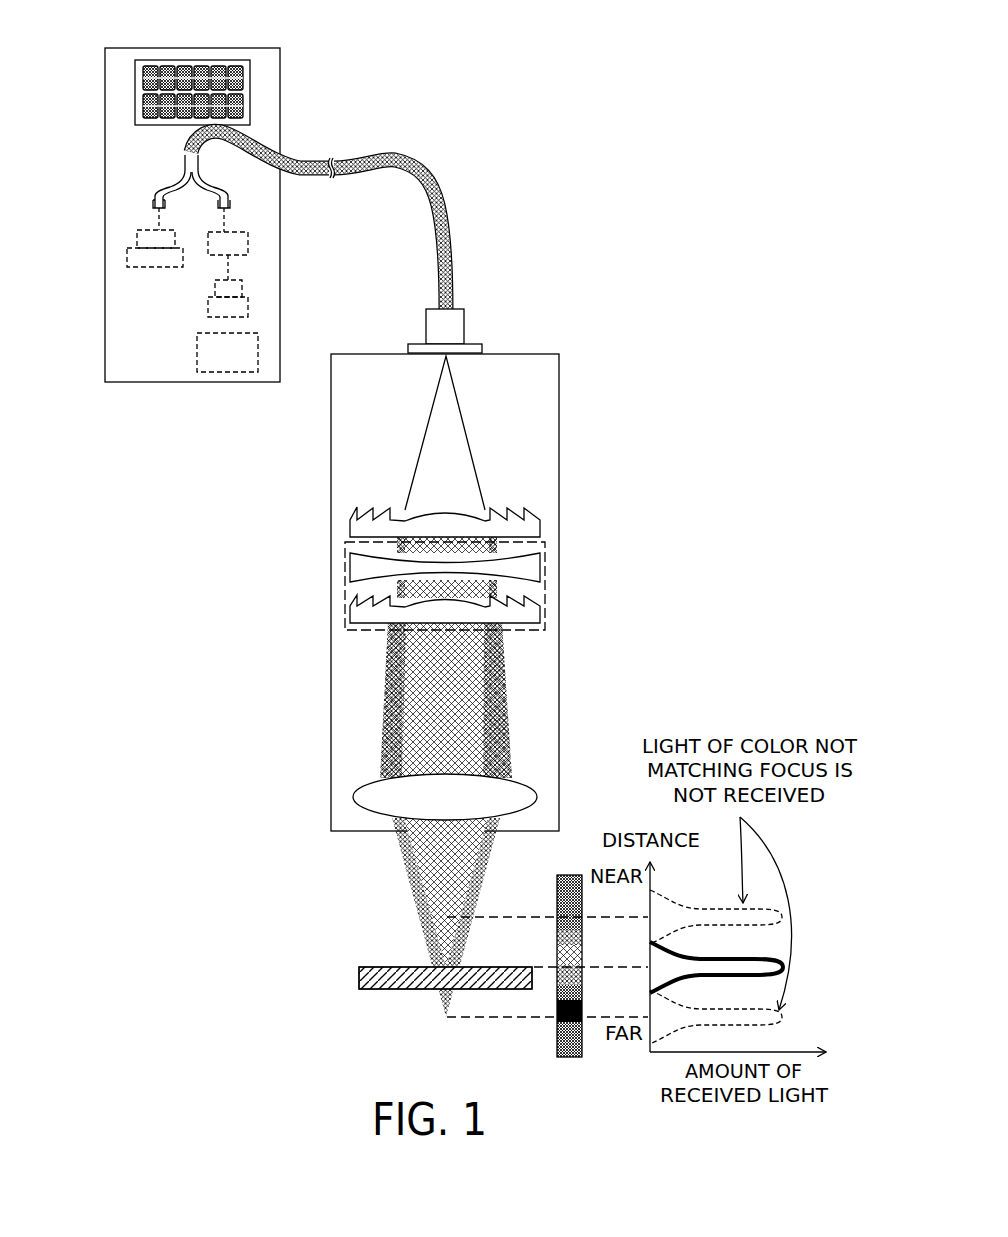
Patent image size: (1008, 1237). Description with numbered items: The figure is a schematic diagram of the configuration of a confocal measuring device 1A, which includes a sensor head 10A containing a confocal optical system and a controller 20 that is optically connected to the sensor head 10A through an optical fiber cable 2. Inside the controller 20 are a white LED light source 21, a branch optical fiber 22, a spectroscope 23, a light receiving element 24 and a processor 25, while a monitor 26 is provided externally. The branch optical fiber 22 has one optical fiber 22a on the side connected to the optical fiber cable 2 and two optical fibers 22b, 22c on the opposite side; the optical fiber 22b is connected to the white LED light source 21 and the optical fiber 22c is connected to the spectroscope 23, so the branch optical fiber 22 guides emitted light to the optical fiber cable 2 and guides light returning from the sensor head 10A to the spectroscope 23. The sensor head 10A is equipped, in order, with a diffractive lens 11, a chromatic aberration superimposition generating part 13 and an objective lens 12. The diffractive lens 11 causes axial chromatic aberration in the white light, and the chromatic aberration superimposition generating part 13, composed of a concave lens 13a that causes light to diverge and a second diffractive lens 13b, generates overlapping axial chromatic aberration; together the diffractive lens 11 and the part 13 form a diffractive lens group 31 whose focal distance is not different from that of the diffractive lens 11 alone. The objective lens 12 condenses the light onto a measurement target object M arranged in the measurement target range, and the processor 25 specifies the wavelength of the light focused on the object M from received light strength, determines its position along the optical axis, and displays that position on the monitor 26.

The confocal measuring device 1A is at (525, 41).
The controller 20 is at (190, 48).
The monitor 26 is at (250, 93).
The branch optical fiber 22 is at (185, 178).
The optical fiber 22a is at (183, 162).
The optical fiber 22b is at (153, 196).
The optical fiber 22c is at (228, 196).
The white LED light source 21 is at (127, 252).
The spectroscope 23 is at (248, 242).
The light receiving element 24 is at (248, 307).
The processor 25 is at (258, 353).
The optical fiber cable 2 is at (452, 270).
The sensor head 10A is at (559, 385).
The diffractive lens group 31 is at (599, 512).
The diffractive lens 11 is at (541, 524).
The chromatic aberration superimposition generating part 13 is at (545, 586).
The concave lens 13a is at (354, 568).
The diffractive lens 13b is at (354, 612).
The objective lens 12 is at (528, 797).
The measurement target object M is at (359, 978).